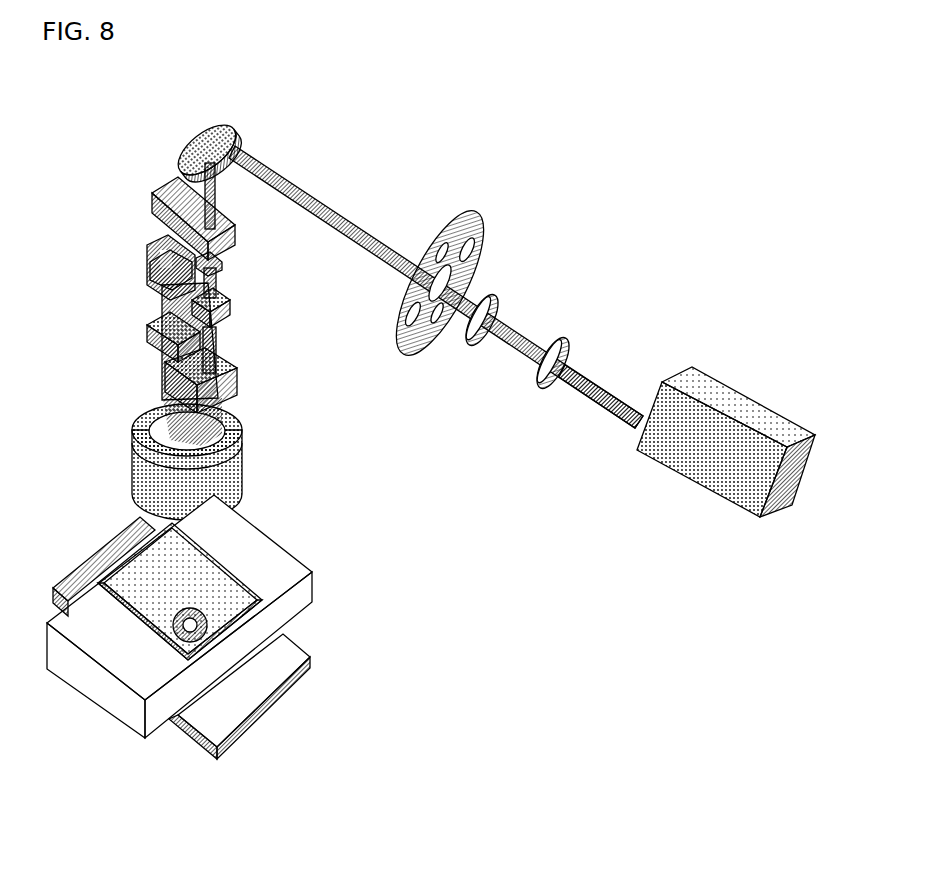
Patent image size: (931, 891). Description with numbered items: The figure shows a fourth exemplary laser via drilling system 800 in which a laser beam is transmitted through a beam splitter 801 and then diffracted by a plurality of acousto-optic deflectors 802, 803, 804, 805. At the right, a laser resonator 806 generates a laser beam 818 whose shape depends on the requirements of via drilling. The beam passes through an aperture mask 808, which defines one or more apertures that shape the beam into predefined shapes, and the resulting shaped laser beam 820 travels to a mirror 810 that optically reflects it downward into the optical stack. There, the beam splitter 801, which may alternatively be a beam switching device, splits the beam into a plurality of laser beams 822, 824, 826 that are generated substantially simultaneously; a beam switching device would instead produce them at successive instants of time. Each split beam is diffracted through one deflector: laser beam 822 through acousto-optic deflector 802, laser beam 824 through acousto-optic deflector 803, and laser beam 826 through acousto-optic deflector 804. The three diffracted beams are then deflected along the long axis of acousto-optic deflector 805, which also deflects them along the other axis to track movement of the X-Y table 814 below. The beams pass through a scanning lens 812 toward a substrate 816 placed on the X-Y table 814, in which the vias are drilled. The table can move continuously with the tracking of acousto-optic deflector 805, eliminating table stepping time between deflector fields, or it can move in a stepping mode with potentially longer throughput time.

The laser via drilling system 800 is at (512, 130).
The beam splitter 801 is at (236, 253).
The acousto-optic deflector 802 is at (147, 258).
The acousto-optic deflector 803 is at (157, 293).
The acousto-optic deflector 804 is at (230, 320).
The acousto-optic deflector 805 is at (239, 394).
The laser resonator 806 is at (754, 405).
The aperture mask 808 is at (484, 240).
The mirror 810 is at (239, 133).
The scanning lens 812 is at (243, 484).
The X-Y table 814 is at (300, 561).
The substrate 816 is at (263, 600).
The laser beam 818 is at (613, 392).
The shaped laser beam 820 is at (312, 199).
The laser beam 822 is at (163, 238).
The laser beam 824 is at (213, 277).
The laser beam 826 is at (207, 267).